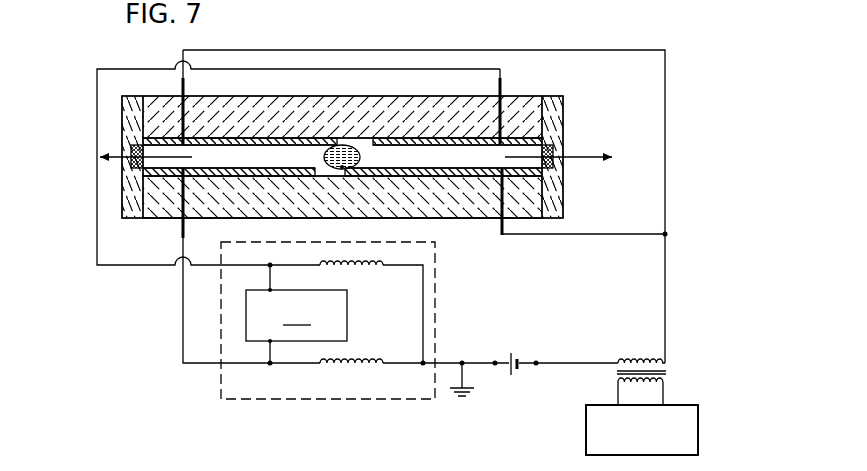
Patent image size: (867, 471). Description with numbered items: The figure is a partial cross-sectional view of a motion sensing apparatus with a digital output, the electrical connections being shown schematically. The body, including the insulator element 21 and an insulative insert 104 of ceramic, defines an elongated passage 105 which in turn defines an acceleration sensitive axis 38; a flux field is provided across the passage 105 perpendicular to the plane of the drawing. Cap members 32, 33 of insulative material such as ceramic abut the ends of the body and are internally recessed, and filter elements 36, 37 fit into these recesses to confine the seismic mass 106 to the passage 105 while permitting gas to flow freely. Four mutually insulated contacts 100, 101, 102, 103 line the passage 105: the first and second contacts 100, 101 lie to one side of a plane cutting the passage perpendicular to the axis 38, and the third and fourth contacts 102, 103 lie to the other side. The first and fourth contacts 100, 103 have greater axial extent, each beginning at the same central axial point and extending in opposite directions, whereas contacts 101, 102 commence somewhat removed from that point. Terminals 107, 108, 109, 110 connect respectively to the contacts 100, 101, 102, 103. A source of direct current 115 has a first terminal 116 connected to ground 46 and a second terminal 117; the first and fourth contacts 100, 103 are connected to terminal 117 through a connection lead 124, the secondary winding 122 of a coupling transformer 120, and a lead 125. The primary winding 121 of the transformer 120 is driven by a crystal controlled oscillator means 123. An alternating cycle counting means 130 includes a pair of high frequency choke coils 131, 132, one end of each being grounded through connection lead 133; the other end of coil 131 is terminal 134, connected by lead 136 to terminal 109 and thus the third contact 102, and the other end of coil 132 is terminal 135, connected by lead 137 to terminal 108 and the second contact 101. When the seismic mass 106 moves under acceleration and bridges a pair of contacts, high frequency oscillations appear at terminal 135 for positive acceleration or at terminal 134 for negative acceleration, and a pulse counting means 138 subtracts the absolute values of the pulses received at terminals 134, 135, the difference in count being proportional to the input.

The insulator element 21 is at (291, 96).
The cap member 32 is at (563, 127).
The cap member 33 is at (122, 125).
The filter element 36 is at (553, 167).
The filter element 37 is at (130, 166).
The acceleration sensitive axis 38 is at (590, 156).
The ground 46 is at (472, 395).
The first contact 100 is at (210, 143).
The second contact 101 is at (243, 176).
The third contact 102 is at (460, 141).
The fourth contact 103 is at (403, 174).
The insulative insert 104 is at (330, 219).
The passage 105 is at (411, 164).
The seismic mass 106 is at (324, 157).
The terminal 107 is at (187, 80).
The terminal 108 is at (187, 232).
The terminal 109 is at (504, 84).
The terminal 110 is at (498, 231).
The source of direct current 115 is at (511, 353).
The first terminal 116 is at (497, 366).
The second terminal 117 is at (538, 366).
The coupling transformer 120 is at (668, 372).
The primary winding 121 is at (652, 383).
The secondary winding 122 is at (650, 361).
The crystal controlled oscillator means 123 is at (698, 428).
The connection lead 124 is at (543, 236).
The lead 125 is at (565, 363).
The alternating cycle counting means 130 is at (305, 400).
The high frequency choke coil 131 is at (355, 270).
The high frequency choke coil 132 is at (356, 360).
The connection lead 133 is at (425, 322).
The terminal 134 is at (273, 264).
The terminal 135 is at (271, 365).
The lead 136 is at (112, 266).
The lead 137 is at (205, 364).
The pulse counting means 138 is at (296, 315).